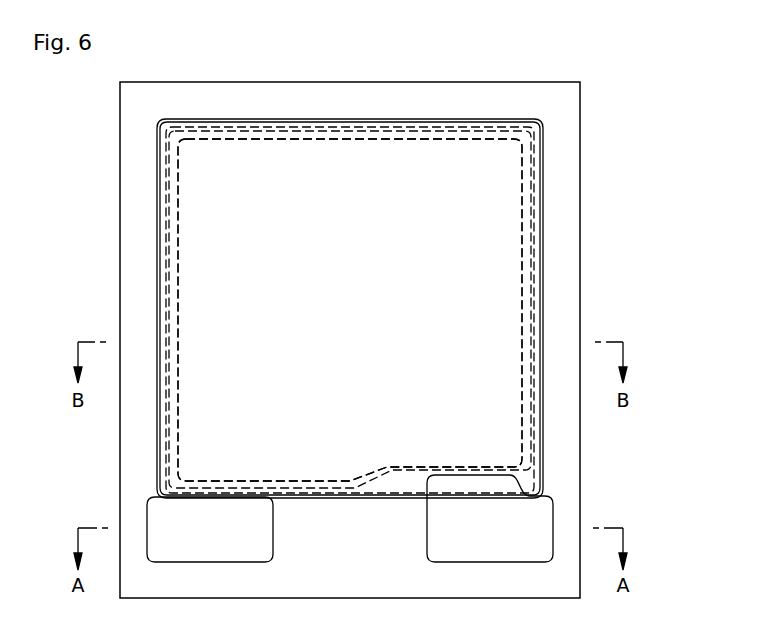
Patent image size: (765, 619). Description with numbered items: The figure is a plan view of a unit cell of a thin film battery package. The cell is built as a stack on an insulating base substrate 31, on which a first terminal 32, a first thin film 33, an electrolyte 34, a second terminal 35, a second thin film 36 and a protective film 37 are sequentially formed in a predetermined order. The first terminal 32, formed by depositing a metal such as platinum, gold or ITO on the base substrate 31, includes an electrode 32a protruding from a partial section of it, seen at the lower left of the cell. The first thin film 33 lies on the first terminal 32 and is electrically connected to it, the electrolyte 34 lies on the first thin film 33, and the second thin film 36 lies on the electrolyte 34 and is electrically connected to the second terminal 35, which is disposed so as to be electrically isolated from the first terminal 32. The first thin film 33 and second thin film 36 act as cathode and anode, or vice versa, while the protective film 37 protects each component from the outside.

The base substrate 31 is at (570, 123).
The first terminal 32 is at (533, 162).
The electrode 32a is at (162, 522).
The first thin film 33 is at (523, 206).
The electrolyte 34 is at (535, 255).
The second terminal 35 is at (541, 510).
The second thin film 36 is at (523, 303).
The protective film 37 is at (541, 430).